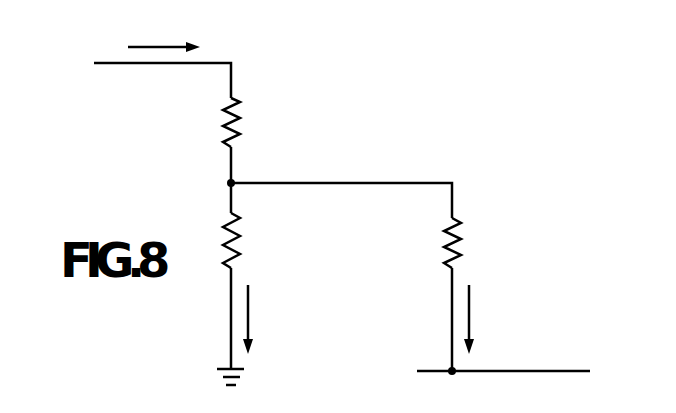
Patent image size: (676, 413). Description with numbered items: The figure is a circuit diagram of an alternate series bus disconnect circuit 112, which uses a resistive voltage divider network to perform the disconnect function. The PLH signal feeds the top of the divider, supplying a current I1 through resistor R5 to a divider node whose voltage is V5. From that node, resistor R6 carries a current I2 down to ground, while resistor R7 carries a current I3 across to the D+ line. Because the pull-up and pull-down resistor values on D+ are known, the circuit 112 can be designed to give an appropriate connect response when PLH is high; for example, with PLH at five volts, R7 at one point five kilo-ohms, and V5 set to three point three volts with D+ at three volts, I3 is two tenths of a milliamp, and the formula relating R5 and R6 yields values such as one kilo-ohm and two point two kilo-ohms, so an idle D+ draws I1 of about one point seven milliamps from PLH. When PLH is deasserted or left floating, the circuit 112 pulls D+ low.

The series bus disconnect circuit 112 is at (472, 125).
The resistor R5 is at (247, 122).
The resistor R6 is at (247, 241).
The resistor R7 is at (468, 244).
The divider node voltage V5 is at (322, 194).
The current drawn from PLH I1 is at (164, 30).
The current through R6 I2 is at (260, 319).
The current through R7 I3 is at (481, 319).